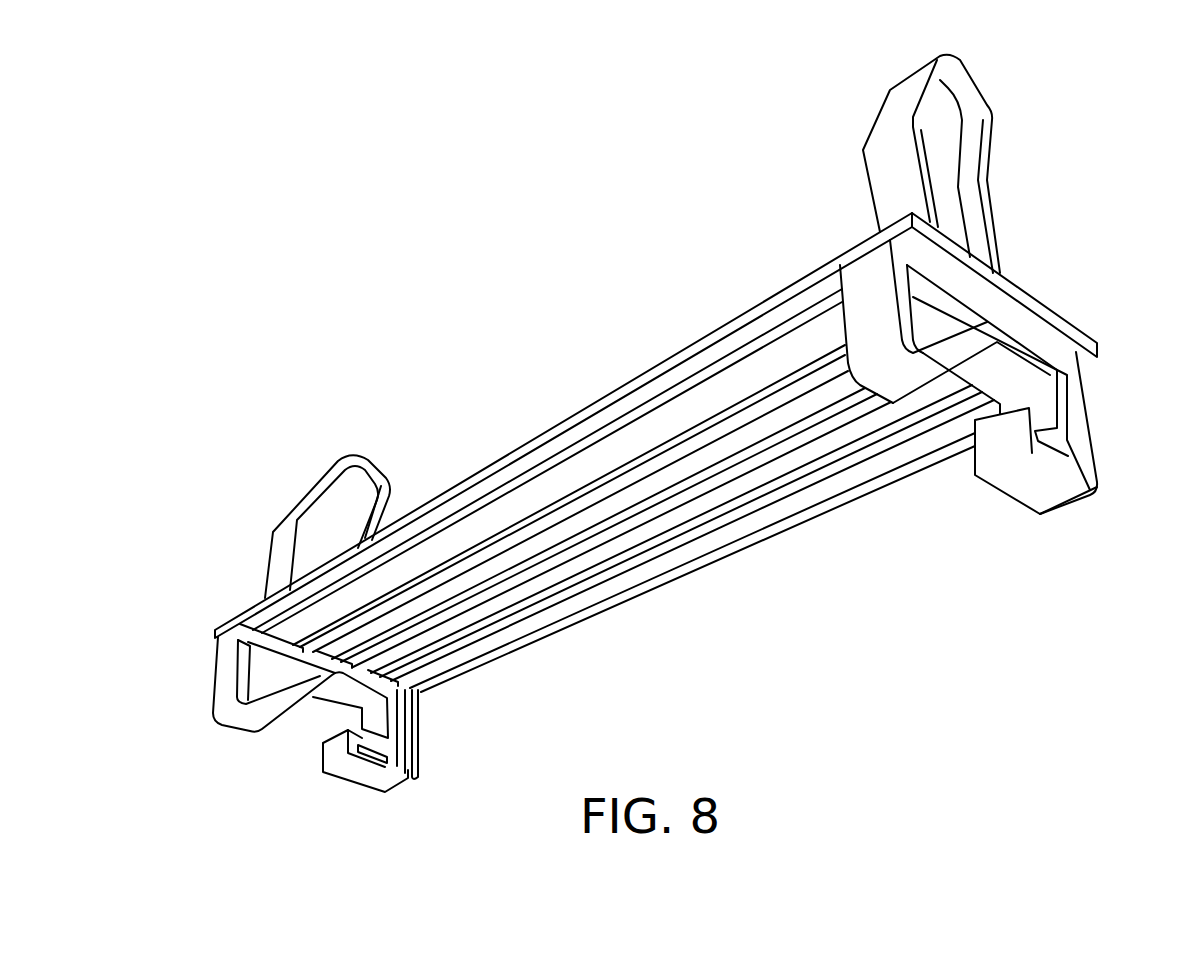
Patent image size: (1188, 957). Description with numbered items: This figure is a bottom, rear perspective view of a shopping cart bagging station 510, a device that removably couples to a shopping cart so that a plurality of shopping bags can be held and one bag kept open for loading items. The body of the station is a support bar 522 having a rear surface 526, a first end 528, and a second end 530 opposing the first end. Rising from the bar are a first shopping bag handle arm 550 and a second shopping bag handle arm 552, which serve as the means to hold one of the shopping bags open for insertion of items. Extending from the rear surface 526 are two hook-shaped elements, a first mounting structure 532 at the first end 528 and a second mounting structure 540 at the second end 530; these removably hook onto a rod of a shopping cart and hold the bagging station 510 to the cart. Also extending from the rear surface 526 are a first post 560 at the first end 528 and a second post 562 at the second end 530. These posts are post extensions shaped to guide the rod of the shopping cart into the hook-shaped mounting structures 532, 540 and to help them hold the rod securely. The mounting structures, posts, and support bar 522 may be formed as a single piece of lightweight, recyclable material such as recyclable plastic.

The shopping cart bagging station 510 is at (658, 447).
The support bar 522 is at (777, 478).
The rear surface 526 is at (620, 620).
The first end 528 is at (202, 624).
The second end 530 is at (1040, 363).
The first mounting structure 532 is at (415, 778).
The second mounting structure 540 is at (1086, 461).
The first shopping bag handle arm 550 is at (347, 478).
The second shopping bag handle arm 552 is at (952, 135).
The first post 560 is at (270, 690).
The second post 562 is at (933, 335).